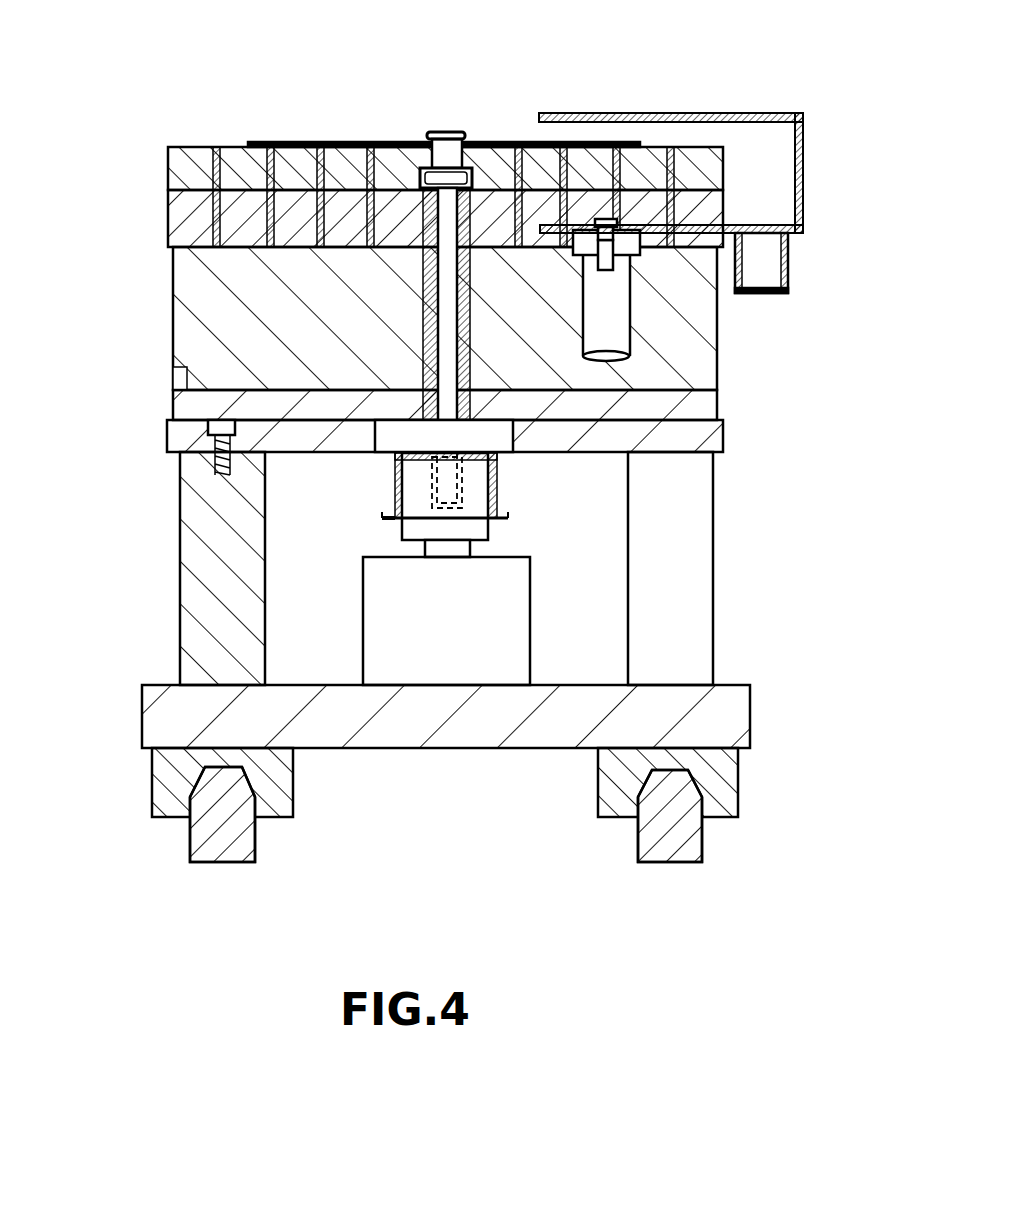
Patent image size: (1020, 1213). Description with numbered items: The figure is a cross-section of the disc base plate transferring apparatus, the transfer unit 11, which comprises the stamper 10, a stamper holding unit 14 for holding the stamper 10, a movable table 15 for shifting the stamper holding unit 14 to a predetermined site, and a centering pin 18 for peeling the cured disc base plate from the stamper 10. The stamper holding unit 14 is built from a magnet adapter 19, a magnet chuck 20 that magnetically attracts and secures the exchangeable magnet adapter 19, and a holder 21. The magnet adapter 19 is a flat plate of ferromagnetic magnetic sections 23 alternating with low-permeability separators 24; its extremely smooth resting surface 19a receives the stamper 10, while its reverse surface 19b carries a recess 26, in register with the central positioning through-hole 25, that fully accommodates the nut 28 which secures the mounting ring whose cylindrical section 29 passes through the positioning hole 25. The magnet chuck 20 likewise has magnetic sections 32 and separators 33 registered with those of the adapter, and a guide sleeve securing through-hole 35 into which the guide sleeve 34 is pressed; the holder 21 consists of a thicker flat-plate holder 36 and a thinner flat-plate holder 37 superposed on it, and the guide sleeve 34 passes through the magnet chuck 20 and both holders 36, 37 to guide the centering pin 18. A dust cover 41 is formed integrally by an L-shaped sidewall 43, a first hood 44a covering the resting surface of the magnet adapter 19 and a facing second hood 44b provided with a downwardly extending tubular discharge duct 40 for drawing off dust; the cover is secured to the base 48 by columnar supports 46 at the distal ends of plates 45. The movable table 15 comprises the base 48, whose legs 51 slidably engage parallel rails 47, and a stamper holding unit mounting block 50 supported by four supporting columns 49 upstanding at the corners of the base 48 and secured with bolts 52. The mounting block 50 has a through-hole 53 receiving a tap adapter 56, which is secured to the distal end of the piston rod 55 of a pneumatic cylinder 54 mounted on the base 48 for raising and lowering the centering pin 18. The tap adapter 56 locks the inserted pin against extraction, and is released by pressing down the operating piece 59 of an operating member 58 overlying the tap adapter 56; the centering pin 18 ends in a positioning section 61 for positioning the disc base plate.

The stamper 10 is at (290, 142).
The transfer unit 11 is at (270, 23).
The stamper holding unit 14 is at (118, 282).
The movable table 15 is at (748, 402).
The centering pin 18 is at (447, 139).
The magnet adapter 19 is at (168, 163).
The resting surface 19a is at (213, 147).
The reverse surface 19b is at (168, 222).
The magnet chuck 20 is at (168, 208).
The holder 21 is at (122, 322).
The magnetic sections 23 is at (182, 155).
The separators 24 is at (220, 147).
The positioning through-hole 25 is at (438, 175).
The recess 26 is at (472, 200).
The nut 28 is at (467, 235).
The cylindrical section 29 is at (433, 132).
The magnetic sections 32 is at (173, 247).
The separators 33 is at (188, 275).
The guide sleeve 34 is at (460, 305).
The guide sleeve securing through-hole 35 is at (424, 255).
The holder 36 is at (173, 340).
The holder 37 is at (173, 398).
The discharge duct 40 is at (790, 268).
The dust cover 41 is at (792, 112).
The sidewall 43 is at (805, 160).
The first hood 44a is at (622, 113).
The second hood 44b is at (803, 233).
The plates 45 is at (622, 250).
The columnar supports 46 is at (610, 335).
The rails 47 is at (190, 850).
The base 48 is at (142, 703).
The supporting columns 49 is at (180, 546).
The stamper holding unit mounting block 50 is at (167, 440).
The legs 51 is at (152, 775).
The bolts 52 is at (217, 472).
The through-hole 53 is at (380, 452).
The pneumatic cylinder 54 is at (530, 620).
The piston rod 55 is at (470, 550).
The tap adapter 56 is at (480, 495).
The operating member 58 is at (497, 458).
The operating piece 59 is at (382, 518).
The positioning section 61 is at (462, 170).